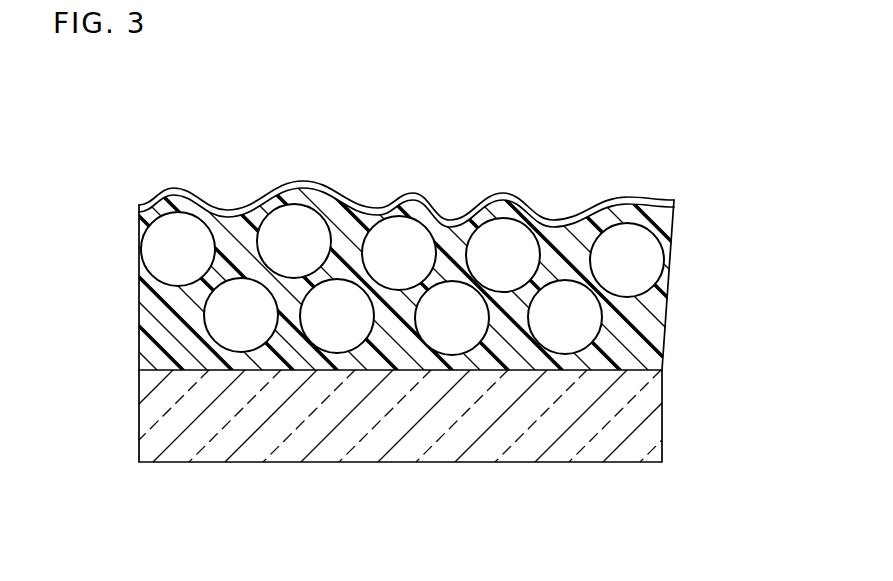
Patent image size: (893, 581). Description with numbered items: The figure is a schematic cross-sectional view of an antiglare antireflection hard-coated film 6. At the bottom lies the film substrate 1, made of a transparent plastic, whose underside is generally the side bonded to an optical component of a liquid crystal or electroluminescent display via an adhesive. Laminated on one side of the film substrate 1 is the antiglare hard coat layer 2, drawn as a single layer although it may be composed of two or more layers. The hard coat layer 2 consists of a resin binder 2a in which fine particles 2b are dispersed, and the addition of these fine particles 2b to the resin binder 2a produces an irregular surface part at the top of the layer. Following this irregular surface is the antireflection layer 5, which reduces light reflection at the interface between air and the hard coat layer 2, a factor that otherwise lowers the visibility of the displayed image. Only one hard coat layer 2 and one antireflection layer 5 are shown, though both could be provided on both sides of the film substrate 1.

The hard-coated antireflection antiglare film 6 is at (181, 146).
The film substrate 1 is at (661, 397).
The antiglare hard coat layer 2 is at (717, 248).
The resin binder 2a is at (656, 325).
The fine particles 2b is at (650, 264).
The antireflection layer 5 is at (638, 197).